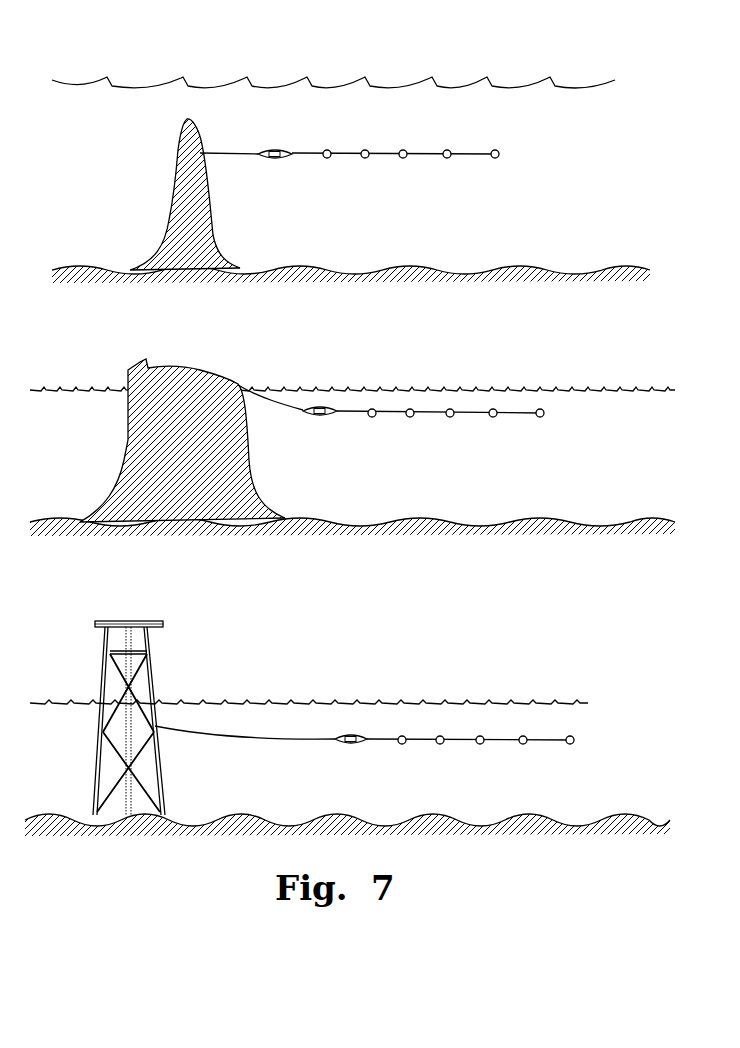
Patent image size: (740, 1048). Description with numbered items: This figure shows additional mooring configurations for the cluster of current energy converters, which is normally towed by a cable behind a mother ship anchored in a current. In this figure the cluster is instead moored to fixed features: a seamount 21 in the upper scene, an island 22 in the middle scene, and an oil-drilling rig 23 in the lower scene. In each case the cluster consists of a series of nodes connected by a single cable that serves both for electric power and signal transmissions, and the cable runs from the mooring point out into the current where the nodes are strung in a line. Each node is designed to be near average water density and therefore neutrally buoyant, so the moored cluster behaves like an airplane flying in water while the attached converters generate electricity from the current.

The seamount 21 is at (185, 125).
The island 22 is at (132, 372).
The oil-drilling rig 23 is at (148, 641).